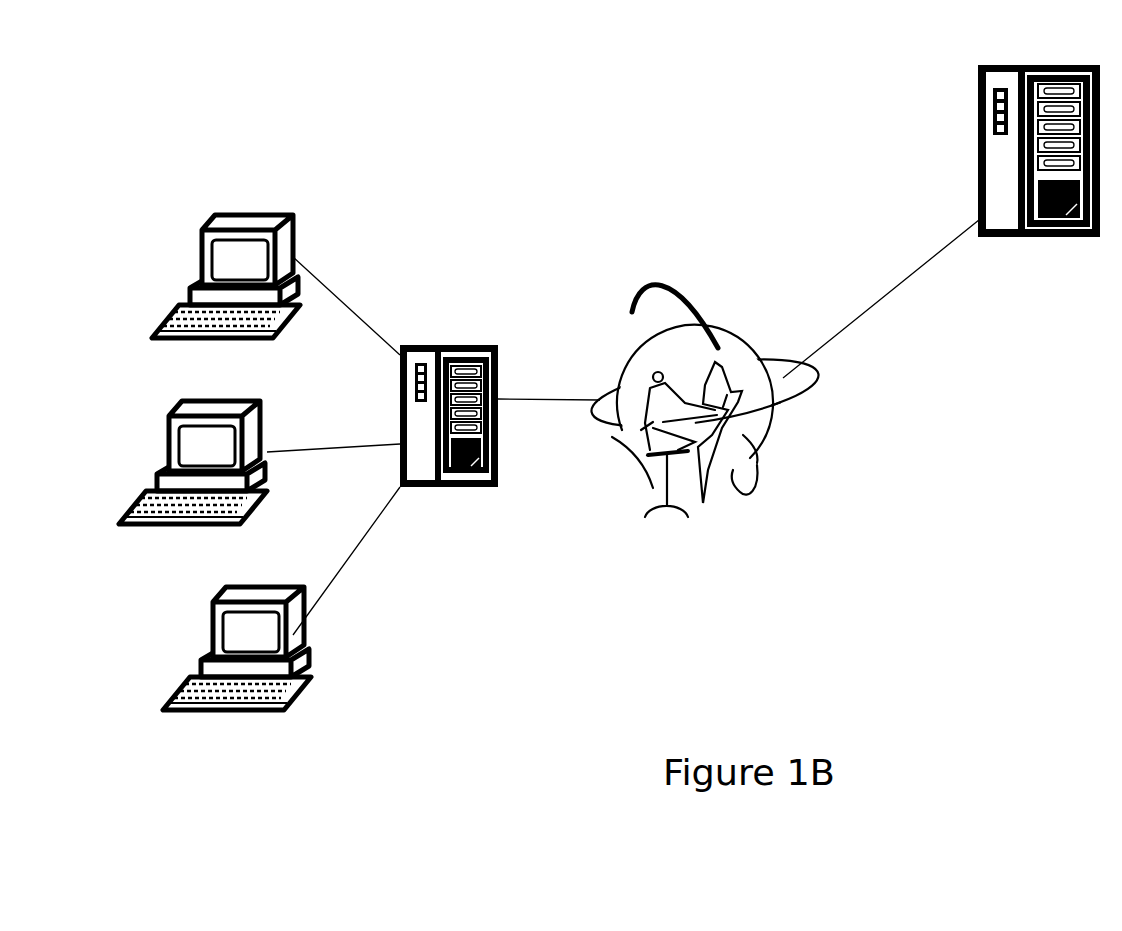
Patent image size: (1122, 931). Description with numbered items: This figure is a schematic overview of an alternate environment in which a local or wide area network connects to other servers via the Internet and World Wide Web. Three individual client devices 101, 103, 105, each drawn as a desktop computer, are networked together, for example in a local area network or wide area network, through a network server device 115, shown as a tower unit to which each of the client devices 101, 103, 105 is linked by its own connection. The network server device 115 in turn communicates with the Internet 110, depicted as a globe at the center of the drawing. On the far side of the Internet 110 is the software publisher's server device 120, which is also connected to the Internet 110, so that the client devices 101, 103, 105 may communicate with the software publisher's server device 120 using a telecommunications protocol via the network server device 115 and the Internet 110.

The client device 101 is at (225, 214).
The client device 103 is at (172, 415).
The client device 105 is at (212, 627).
The network server device 115 is at (455, 345).
The Internet 110 is at (662, 302).
The software publisher's server device 120 is at (988, 83).